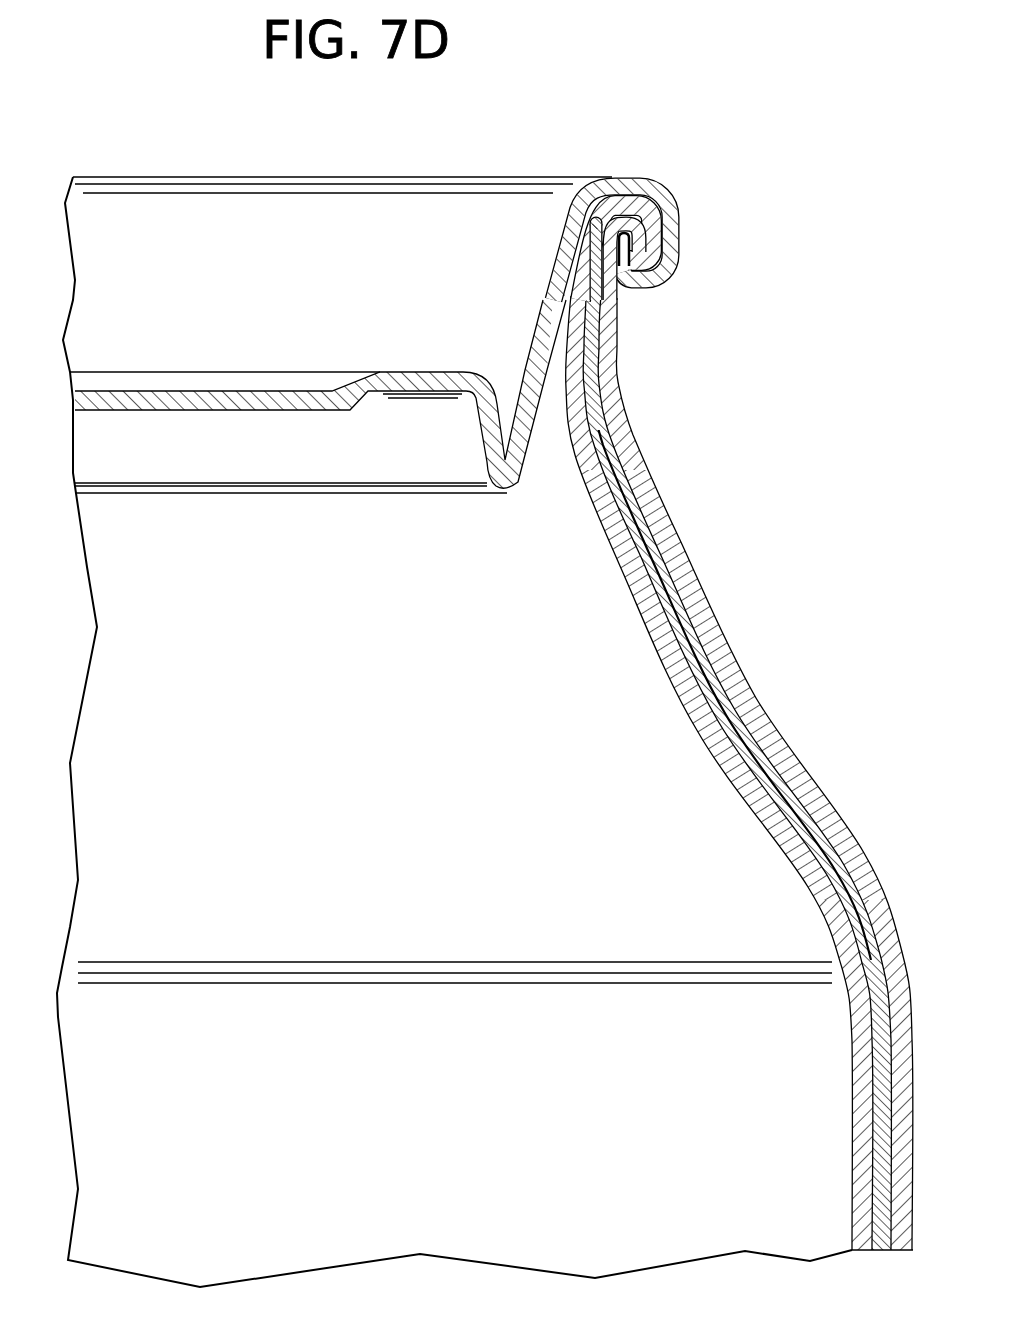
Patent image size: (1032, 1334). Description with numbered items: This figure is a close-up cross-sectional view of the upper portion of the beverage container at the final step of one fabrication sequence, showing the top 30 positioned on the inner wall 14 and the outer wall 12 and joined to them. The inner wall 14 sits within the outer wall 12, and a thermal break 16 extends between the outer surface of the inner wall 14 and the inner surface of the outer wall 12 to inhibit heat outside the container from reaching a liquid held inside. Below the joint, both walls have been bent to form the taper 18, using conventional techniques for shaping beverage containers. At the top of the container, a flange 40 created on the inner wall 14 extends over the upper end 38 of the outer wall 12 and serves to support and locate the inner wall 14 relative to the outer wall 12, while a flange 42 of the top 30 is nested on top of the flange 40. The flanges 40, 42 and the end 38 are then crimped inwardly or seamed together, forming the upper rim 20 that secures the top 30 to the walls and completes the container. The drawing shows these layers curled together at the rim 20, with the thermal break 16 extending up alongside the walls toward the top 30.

The outer wall 12 is at (620, 349).
The inner wall 14 is at (592, 510).
The thermal break 16 is at (628, 488).
The taper 18 is at (709, 728).
The upper rim 20 is at (629, 203).
The top 30 is at (420, 370).
The upper end 38 is at (642, 251).
The flange 40 is at (655, 232).
The flange 42 is at (650, 170).